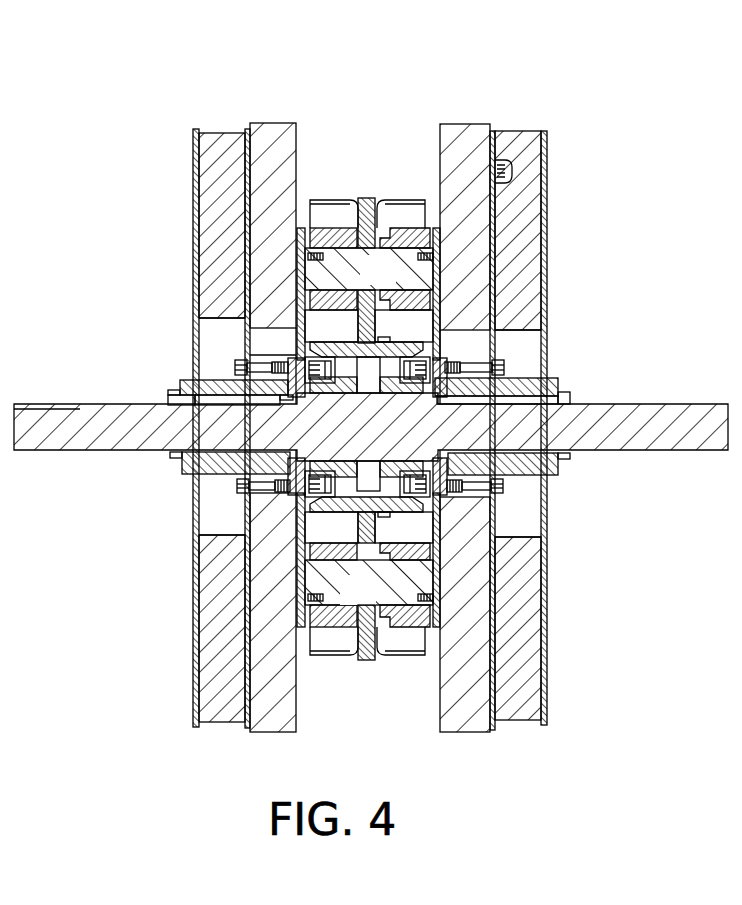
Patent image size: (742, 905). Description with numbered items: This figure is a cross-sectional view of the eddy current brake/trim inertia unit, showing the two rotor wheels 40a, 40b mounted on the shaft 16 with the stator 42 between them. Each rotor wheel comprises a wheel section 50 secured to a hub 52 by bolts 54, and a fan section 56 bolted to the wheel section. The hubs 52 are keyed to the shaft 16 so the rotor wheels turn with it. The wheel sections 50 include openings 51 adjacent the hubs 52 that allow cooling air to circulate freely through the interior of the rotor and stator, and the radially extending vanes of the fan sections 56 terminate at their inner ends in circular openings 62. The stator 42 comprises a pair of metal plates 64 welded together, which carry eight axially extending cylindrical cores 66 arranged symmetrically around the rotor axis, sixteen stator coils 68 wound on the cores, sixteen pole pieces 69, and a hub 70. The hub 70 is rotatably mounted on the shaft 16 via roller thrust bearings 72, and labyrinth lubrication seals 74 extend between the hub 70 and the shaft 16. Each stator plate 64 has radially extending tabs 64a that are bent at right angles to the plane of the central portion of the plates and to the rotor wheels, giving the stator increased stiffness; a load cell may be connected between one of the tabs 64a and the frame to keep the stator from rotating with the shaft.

The shaft 16 is at (88, 403).
The rotor wheel 40a is at (303, 110).
The rotor wheel 40b is at (556, 110).
The stator 42 is at (365, 664).
The wheel section 50 is at (437, 138).
The openings 51 is at (266, 345).
The hub 52 is at (193, 480).
The bolts 54 is at (195, 356).
The fan section 56 is at (215, 198).
The circular openings 62 is at (196, 338).
The metal plates 64 is at (380, 322).
The tabs 64a is at (362, 215).
The cylindrical cores 66 is at (394, 282).
The stator coils 68 is at (332, 226).
The pole pieces 69 is at (300, 289).
The hub 70 is at (352, 335).
The roller thrust bearings 72 is at (366, 416).
The labyrinth lubrication seals 74 is at (316, 471).